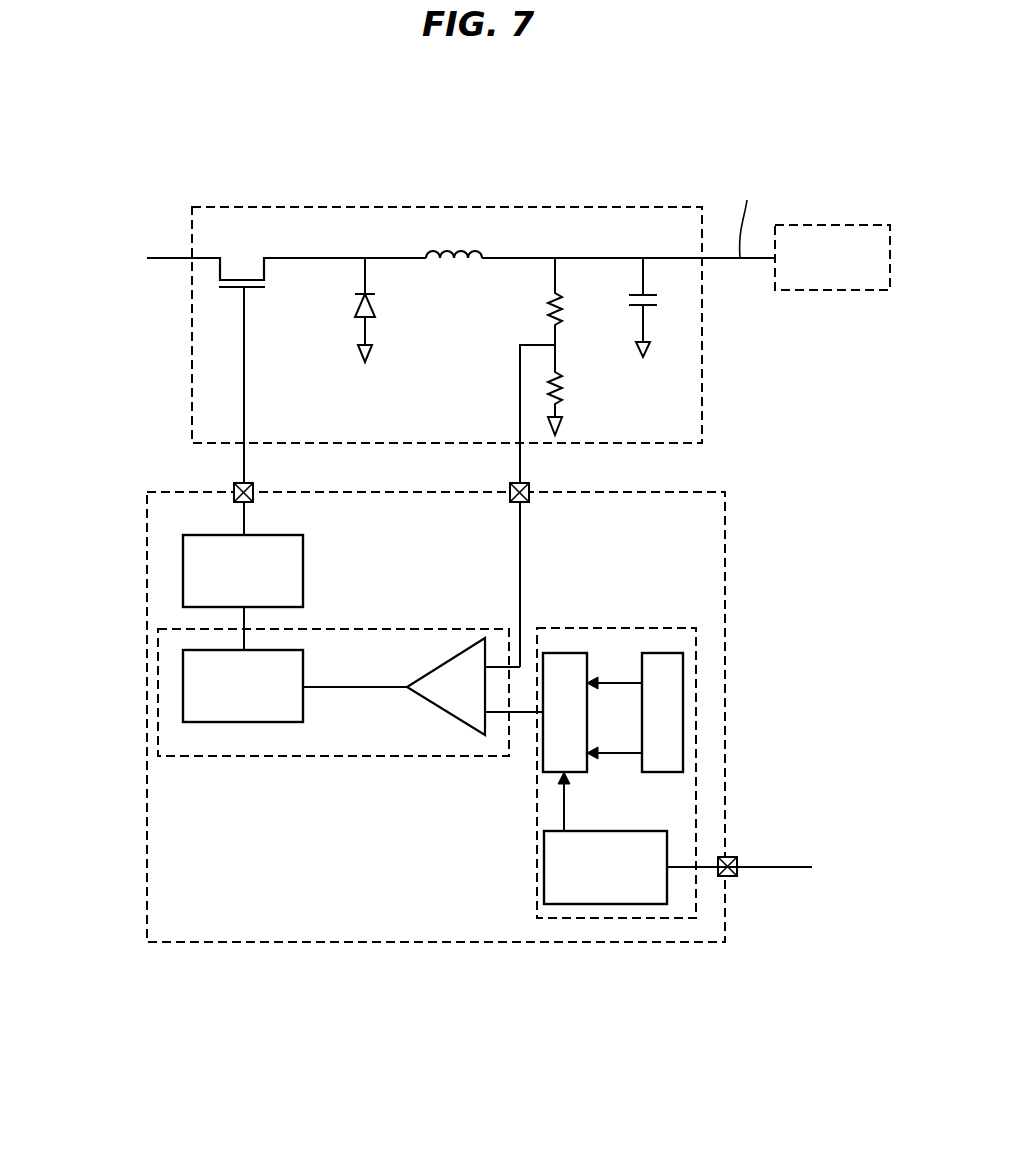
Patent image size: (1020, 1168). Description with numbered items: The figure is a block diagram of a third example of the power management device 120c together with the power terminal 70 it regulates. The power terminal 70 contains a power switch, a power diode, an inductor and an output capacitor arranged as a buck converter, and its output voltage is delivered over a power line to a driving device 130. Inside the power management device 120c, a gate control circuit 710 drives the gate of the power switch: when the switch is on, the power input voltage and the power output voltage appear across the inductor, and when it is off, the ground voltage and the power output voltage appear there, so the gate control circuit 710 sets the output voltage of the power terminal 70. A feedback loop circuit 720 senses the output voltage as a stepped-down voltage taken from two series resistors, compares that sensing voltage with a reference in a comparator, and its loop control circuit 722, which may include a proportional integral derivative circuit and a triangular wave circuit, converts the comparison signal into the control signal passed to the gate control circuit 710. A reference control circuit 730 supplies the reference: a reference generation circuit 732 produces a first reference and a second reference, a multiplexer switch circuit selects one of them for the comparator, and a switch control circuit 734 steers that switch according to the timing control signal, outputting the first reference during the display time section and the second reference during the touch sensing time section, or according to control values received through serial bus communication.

The power terminal 70 is at (586, 207).
The driving device 130 is at (832, 257).
The power management device 120c is at (461, 739).
The gate control circuit 710 is at (183, 578).
The feedback loop circuit 720 is at (158, 742).
The loop control circuit 722 is at (183, 672).
The reference control circuit 730 is at (695, 657).
The reference generation circuit 732 is at (683, 737).
The switch control circuit 734 is at (584, 904).